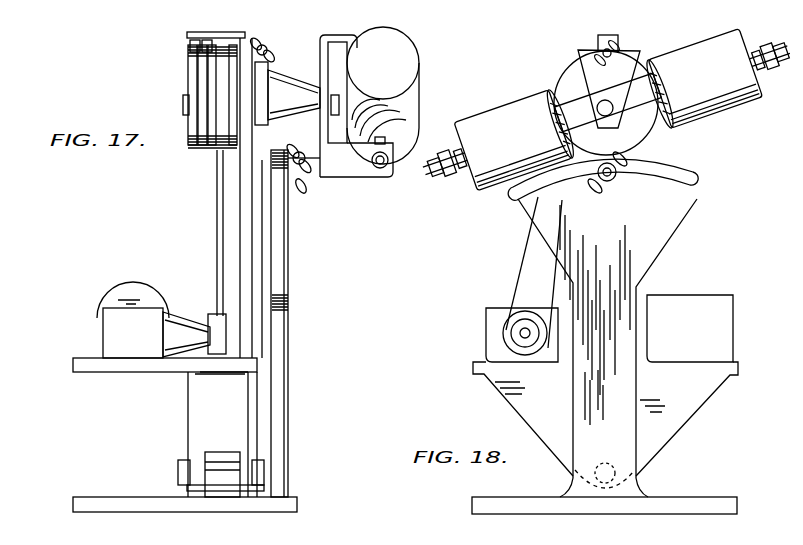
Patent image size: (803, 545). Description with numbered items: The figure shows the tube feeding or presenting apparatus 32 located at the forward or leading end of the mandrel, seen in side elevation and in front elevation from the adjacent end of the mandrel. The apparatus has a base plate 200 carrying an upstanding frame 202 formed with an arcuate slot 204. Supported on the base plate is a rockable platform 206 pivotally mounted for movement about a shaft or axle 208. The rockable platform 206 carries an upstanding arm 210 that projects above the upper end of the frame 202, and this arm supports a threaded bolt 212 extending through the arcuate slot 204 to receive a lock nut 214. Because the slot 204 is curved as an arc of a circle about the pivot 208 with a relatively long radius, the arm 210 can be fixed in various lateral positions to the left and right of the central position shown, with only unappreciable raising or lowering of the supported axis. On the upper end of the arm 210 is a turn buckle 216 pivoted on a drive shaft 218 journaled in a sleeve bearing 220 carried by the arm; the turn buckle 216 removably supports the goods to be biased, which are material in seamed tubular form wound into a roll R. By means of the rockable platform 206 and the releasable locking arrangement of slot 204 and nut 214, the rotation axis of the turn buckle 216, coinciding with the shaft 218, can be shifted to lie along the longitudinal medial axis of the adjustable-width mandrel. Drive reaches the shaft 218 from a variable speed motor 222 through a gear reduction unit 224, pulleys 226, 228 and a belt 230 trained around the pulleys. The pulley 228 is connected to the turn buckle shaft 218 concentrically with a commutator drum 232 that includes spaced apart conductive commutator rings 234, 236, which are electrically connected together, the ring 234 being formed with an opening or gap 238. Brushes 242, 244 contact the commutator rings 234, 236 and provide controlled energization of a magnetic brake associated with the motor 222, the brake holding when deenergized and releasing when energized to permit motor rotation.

In FIG. 17, the material delivery or presenting apparatus 32 is at (62, 226).
In FIG. 18, the material delivery or presenting apparatus 32 is at (734, 212).
In FIG. 17, the base plate 200 is at (99, 506).
In FIG. 18, the base plate 200 is at (693, 503).
In FIG. 17, the upstanding frame 202 is at (288, 352).
In FIG. 18, the upstanding frame 202 is at (664, 247).
In FIG. 18, the arcuate slot 204 is at (674, 160).
In FIG. 17, the rockable platform 206 is at (205, 367).
In FIG. 18, the rockable platform 206 is at (703, 396).
In FIG. 17, the shaft or axle 208 is at (263, 478).
In FIG. 18, the shaft or axle 208 is at (608, 458).
In FIG. 17, the upstanding arm 210 is at (255, 245).
In FIG. 18, the upstanding arm 210 is at (623, 136).
In FIG. 17, the threaded bolt 212 is at (308, 163).
In FIG. 18, the threaded bolt 212 is at (609, 181).
In FIG. 17, the lock nut 214 is at (303, 189).
In FIG. 18, the lock nut 214 is at (594, 197).
In FIG. 17, the turn buckle 216 is at (323, 42).
In FIG. 18, the turn buckle 216 is at (761, 70).
In FIG. 17, the drive shaft 218 is at (331, 106).
In FIG. 18, the drive shaft 218 is at (612, 108).
In FIG. 17, the sleeve bearing 220 is at (300, 74).
In FIG. 17, the variable speed motor 222 is at (112, 300).
In FIG. 17, the gear reduction unit 224 is at (110, 345).
In FIG. 18, the gear reduction unit 224 is at (492, 324).
In FIG. 17, the pulley 226 is at (215, 316).
In FIG. 18, the pulley 226 is at (512, 335).
In FIG. 17, the pulley 228 is at (213, 156).
In FIG. 17, the belt 230 is at (218, 237).
In FIG. 18, the belt 230 is at (518, 262).
In FIG. 17, the commutator drum 232 is at (190, 142).
In FIG. 17, the commutator ring 234 is at (190, 125).
In FIG. 17, the commutator ring 236 is at (205, 72).
In FIG. 17, the opening or gap 238 is at (195, 105).
In FIG. 17, the brush 242 is at (187, 48).
In FIG. 17, the brush 244 is at (190, 43).
In FIG. 17, the roll R is at (417, 80).
In FIG. 18, the roll R is at (483, 196).